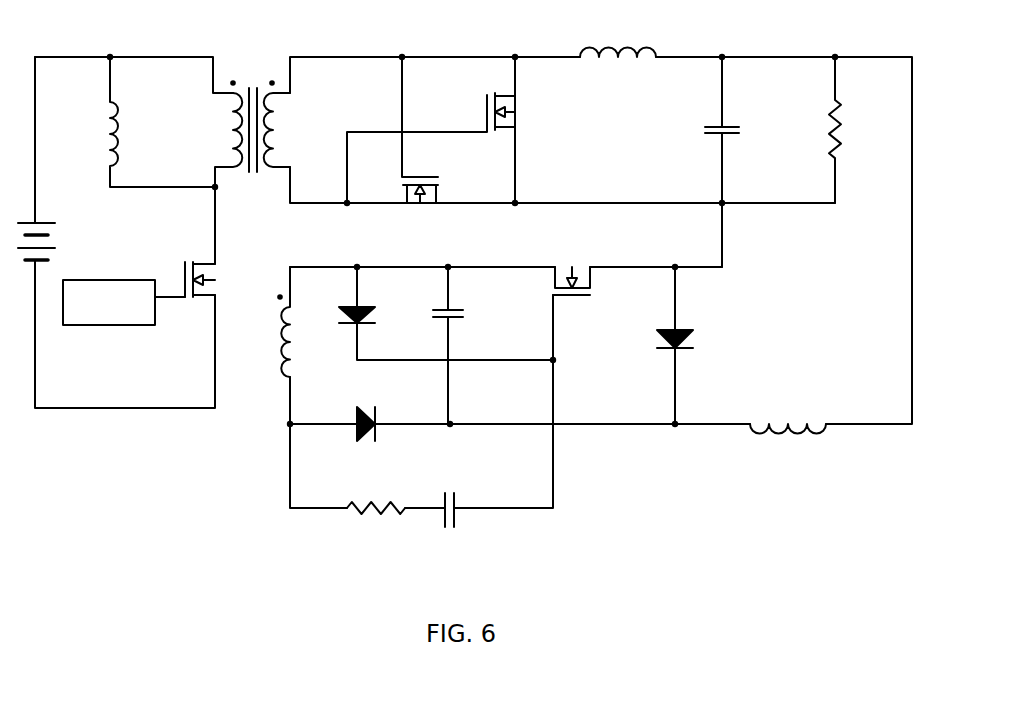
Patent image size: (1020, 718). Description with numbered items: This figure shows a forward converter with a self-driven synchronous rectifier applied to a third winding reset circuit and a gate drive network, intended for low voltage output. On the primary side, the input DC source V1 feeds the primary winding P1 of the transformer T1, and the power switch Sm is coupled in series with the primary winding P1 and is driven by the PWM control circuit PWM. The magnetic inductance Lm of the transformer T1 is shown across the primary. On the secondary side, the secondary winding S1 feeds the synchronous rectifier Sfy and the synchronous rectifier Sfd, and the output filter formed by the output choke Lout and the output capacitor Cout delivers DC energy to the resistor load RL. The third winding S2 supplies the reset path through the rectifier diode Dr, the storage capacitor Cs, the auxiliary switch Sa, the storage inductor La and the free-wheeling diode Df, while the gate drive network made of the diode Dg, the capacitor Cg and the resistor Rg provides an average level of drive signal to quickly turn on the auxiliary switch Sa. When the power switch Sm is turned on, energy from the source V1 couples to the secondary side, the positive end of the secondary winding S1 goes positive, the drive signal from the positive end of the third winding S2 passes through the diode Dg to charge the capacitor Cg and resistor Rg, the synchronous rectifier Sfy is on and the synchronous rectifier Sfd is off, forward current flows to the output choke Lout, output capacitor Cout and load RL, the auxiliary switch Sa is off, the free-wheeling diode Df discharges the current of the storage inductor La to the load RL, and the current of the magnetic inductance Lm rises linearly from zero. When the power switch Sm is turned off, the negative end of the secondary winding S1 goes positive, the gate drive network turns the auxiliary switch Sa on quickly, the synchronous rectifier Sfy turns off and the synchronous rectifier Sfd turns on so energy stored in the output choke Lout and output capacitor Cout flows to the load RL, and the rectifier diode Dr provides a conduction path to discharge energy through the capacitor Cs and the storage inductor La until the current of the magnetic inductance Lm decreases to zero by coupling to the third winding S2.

The input DC source V1 is at (50, 236).
The magnetic inductance Lm is at (138, 122).
The primary winding P1 is at (213, 133).
The transformer T1 is at (248, 149).
The secondary winding S1 is at (286, 123).
The PWM control circuit PWM is at (124, 302).
The power switch Sm is at (220, 282).
The synchronous rectifier Sfy is at (419, 154).
The synchronous rectifier Sfd is at (453, 130).
The output choke Lout is at (618, 39).
The output capacitor Cout is at (747, 162).
The resistor load RL is at (853, 130).
The auxiliary switch Sa is at (573, 267).
The diode Dg is at (446, 313).
The storage capacitor Cs is at (463, 345).
The free-wheeling diode Df is at (692, 345).
The third winding S2 is at (301, 322).
The rectifier diode Dr is at (359, 411).
The resistor Rg is at (374, 490).
The capacitor Cg is at (443, 494).
The storage inductor La is at (788, 416).